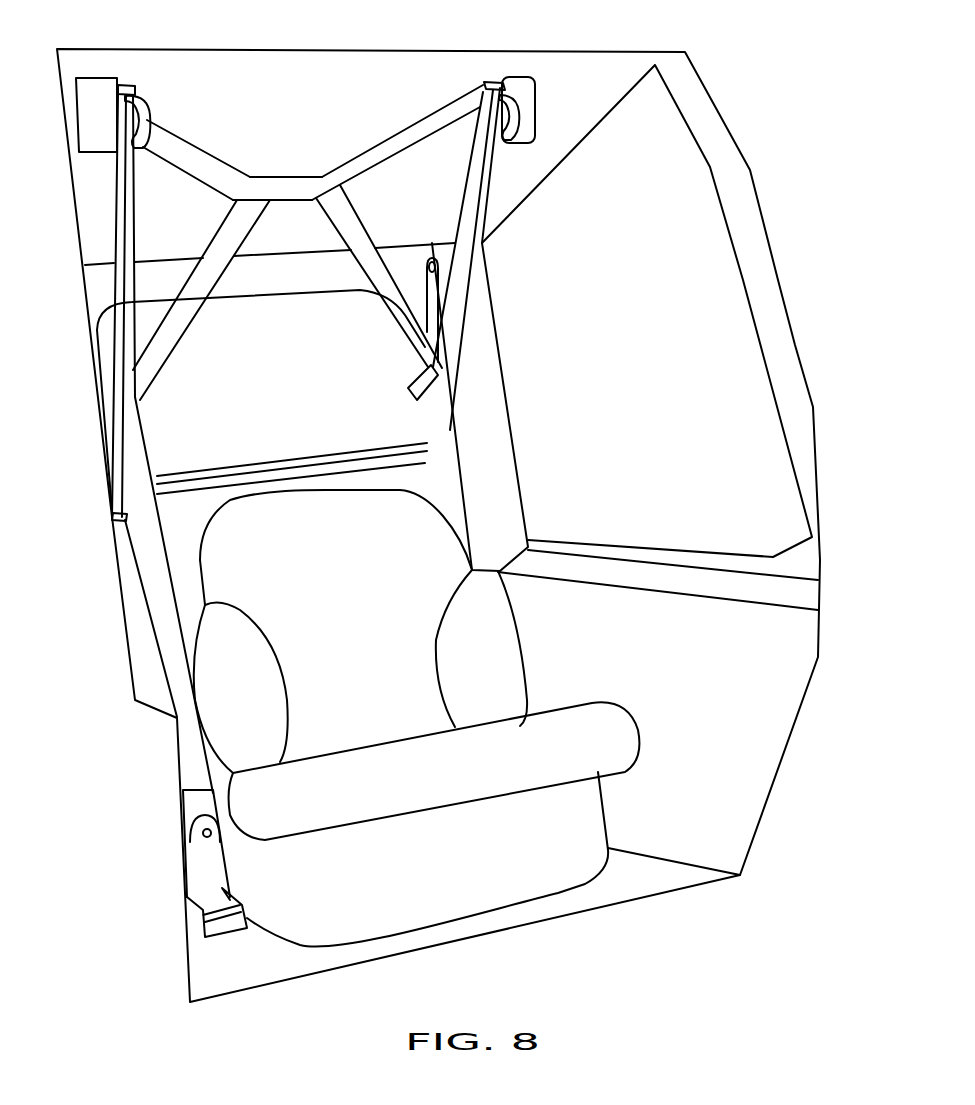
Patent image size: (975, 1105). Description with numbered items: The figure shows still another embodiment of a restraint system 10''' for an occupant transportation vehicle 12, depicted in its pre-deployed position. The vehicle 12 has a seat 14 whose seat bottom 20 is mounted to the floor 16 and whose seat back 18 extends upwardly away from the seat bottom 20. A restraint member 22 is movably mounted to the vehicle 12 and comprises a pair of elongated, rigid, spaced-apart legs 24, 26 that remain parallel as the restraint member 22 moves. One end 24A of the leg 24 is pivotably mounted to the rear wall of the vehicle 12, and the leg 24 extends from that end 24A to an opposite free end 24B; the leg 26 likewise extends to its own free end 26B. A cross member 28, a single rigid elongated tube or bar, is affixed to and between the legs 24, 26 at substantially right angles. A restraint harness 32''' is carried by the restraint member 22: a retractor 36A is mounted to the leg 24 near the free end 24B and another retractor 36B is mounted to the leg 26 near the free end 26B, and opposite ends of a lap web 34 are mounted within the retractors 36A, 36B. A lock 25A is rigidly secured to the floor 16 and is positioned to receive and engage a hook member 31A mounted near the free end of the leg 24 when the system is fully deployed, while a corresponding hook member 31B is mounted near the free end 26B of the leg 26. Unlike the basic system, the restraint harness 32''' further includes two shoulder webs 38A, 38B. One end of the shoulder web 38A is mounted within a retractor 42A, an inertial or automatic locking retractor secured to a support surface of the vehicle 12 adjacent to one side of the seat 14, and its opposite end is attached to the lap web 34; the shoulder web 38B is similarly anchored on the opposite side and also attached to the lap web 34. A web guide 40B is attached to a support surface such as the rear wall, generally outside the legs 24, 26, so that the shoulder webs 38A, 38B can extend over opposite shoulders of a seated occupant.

The restraint system 10''' is at (438, 525).
The transportation vehicle 12 is at (692, 547).
The seat 14 is at (630, 810).
The floor 16 is at (652, 887).
The seat back 18 is at (368, 628).
The seat bottom 20 is at (438, 793).
The restraint member 22 is at (206, 462).
The leg 24 is at (115, 182).
The end of leg 24A is at (120, 528).
The free end of leg 24B is at (128, 85).
The lock 25A is at (222, 945).
The leg 26 is at (475, 285).
The free end of leg 26B is at (490, 82).
The cross member 28 is at (307, 459).
The hook member 31A is at (152, 117).
The hook member 31B is at (524, 118).
The restraint harness 32''' is at (289, 140).
The lap web 34 is at (417, 126).
The retractor 36A is at (92, 78).
The retractor 36B is at (528, 77).
The shoulder web 38A is at (190, 332).
The shoulder web 38B is at (366, 308).
The web guide 40B is at (412, 395).
The retractor 42A is at (184, 840).